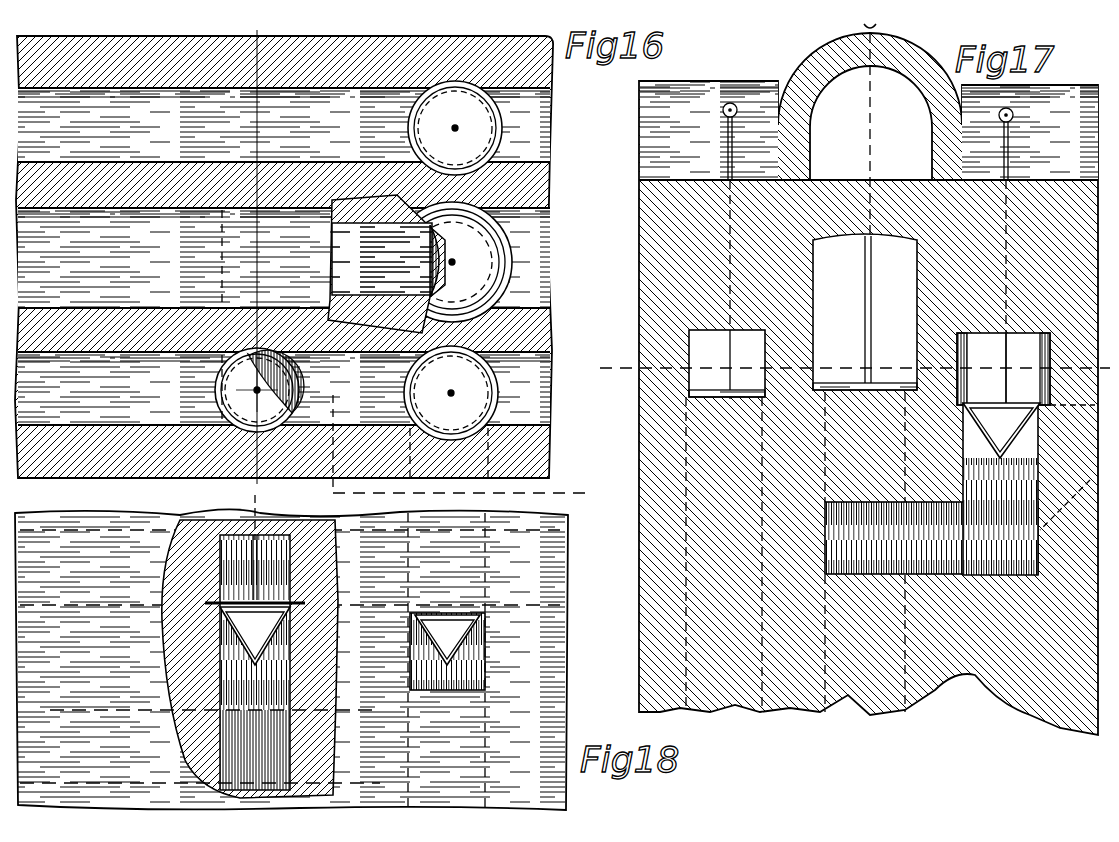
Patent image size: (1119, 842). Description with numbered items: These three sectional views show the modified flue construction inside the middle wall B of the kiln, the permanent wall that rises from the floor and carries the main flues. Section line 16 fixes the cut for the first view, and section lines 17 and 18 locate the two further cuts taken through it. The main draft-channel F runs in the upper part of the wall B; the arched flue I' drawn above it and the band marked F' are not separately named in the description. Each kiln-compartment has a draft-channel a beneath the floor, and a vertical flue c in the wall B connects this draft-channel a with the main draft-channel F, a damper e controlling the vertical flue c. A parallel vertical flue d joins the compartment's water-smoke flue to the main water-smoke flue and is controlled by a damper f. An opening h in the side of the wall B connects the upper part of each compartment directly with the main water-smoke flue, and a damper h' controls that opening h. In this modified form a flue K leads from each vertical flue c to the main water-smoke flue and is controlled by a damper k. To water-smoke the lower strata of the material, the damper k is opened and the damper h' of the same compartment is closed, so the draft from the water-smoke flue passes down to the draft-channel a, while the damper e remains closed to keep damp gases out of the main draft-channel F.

In FIG. 16, the wall B is at (410, 38).
In FIG. 17, the wall B is at (868, 384).
In FIG. 18, the wall B is at (555, 562).
In FIG. 16, the draft-channel a is at (331, 262).
In FIG. 17, the draft-channel a is at (700, 378).
In FIG. 18, the draft-channel a is at (182, 568).
In FIG. 16, the vertical flue c is at (430, 240).
In FIG. 17, the vertical flue c is at (900, 500).
In FIG. 18, the vertical flue c is at (330, 720).
In FIG. 17, the vertical flue d is at (748, 695).
In FIG. 16, the damper e is at (452, 262).
In FIG. 17, the damper e is at (868, 380).
In FIG. 16, the damper f is at (505, 130).
In FIG. 17, the damper f is at (735, 251).
In FIG. 16, the main draft-channel F is at (556, 265).
In FIG. 16, the band / window F' is at (166, 265).
In FIG. 17, the band / window F' is at (865, 368).
In FIG. 16, the opening h is at (488, 393).
In FIG. 17, the opening h is at (1049, 477).
In FIG. 18, the opening h is at (460, 661).
In FIG. 18, the damper h' is at (529, 633).
In FIG. 17, the arched opening I' is at (871, 129).
In FIG. 16, the damper k is at (240, 395).
In FIG. 17, the damper k is at (1010, 138).
In FIG. 16, the flue K is at (386, 264).
In FIG. 17, the flue K is at (900, 540).
In FIG. 18, the flue K is at (245, 628).
In FIG. 17, the section line 16 is at (856, 534).
In FIG. 16, the section line 17 is at (245, 248).
In FIG. 18, the section line 17 is at (151, 494).
In FIG. 16, the section line 18 is at (369, 441).